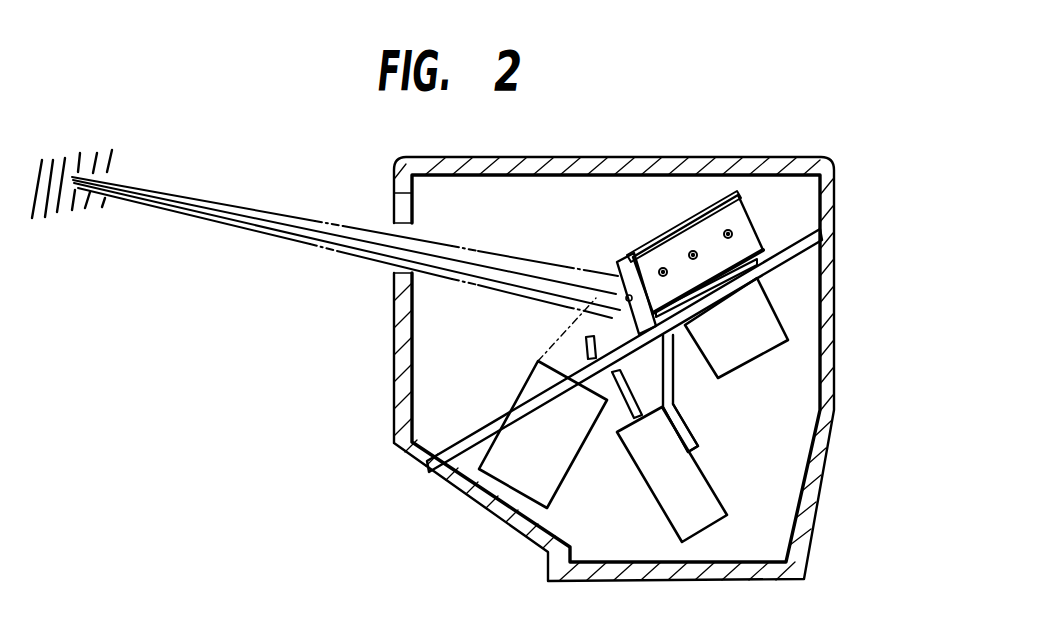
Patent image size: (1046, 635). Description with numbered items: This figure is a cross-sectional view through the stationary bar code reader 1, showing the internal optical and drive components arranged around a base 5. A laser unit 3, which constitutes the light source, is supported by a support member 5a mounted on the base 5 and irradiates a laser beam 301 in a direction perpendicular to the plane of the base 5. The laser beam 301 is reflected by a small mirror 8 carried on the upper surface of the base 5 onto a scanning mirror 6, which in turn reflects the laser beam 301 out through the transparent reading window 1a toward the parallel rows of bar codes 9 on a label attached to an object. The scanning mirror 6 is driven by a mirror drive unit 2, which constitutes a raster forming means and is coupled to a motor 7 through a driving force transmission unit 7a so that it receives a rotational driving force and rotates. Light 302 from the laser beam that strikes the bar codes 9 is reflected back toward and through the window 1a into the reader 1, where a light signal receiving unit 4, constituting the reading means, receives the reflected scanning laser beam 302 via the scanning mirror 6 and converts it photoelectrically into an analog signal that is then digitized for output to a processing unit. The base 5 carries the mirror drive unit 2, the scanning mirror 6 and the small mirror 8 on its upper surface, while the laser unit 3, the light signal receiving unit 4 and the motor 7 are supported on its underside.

The bar code reader 1 is at (606, 160).
The transparent reading window 1a is at (407, 318).
The mirror drive unit 2 is at (743, 226).
The laser unit 3 is at (681, 523).
The light signal receiving unit 4 is at (531, 478).
The base 5 is at (825, 240).
The support member 5a is at (687, 438).
The scanning mirror 6 is at (662, 350).
The motor 7 is at (770, 335).
The driving force transmission unit 7a is at (757, 278).
The small mirror 8 is at (592, 346).
The bar codes 9 is at (88, 156).
The laser beam 301 is at (253, 230).
The reflected scanning laser beam 302 is at (268, 211).